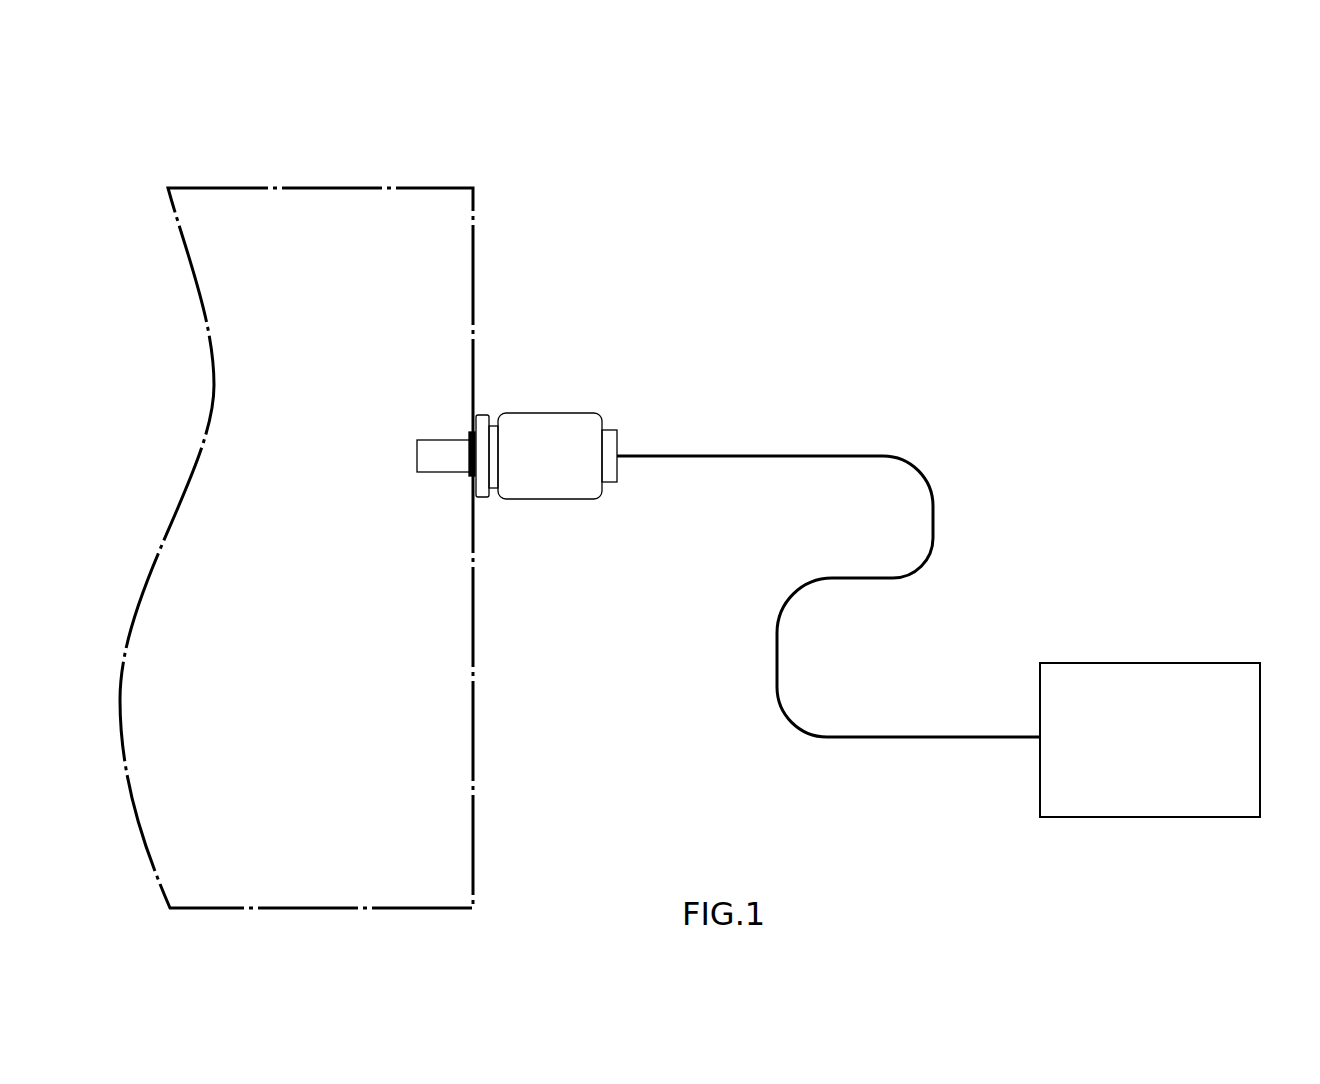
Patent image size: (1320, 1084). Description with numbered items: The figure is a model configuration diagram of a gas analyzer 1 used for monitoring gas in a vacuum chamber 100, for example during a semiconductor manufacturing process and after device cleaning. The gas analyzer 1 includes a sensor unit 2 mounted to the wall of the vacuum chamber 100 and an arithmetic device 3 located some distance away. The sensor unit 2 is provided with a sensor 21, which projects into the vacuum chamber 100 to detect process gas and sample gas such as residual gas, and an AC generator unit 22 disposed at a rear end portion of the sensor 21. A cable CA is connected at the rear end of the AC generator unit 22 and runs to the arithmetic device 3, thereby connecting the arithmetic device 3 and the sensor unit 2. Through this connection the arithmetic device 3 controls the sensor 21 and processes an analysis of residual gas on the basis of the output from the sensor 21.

The gas analyzer 1 is at (935, 288).
The sensor unit 2 is at (517, 382).
The sensor 21 is at (445, 440).
The AC generator unit 22 is at (520, 310).
The arithmetic device 3 is at (1148, 663).
The vacuum chamber 100 is at (417, 188).
The cable CA is at (935, 518).